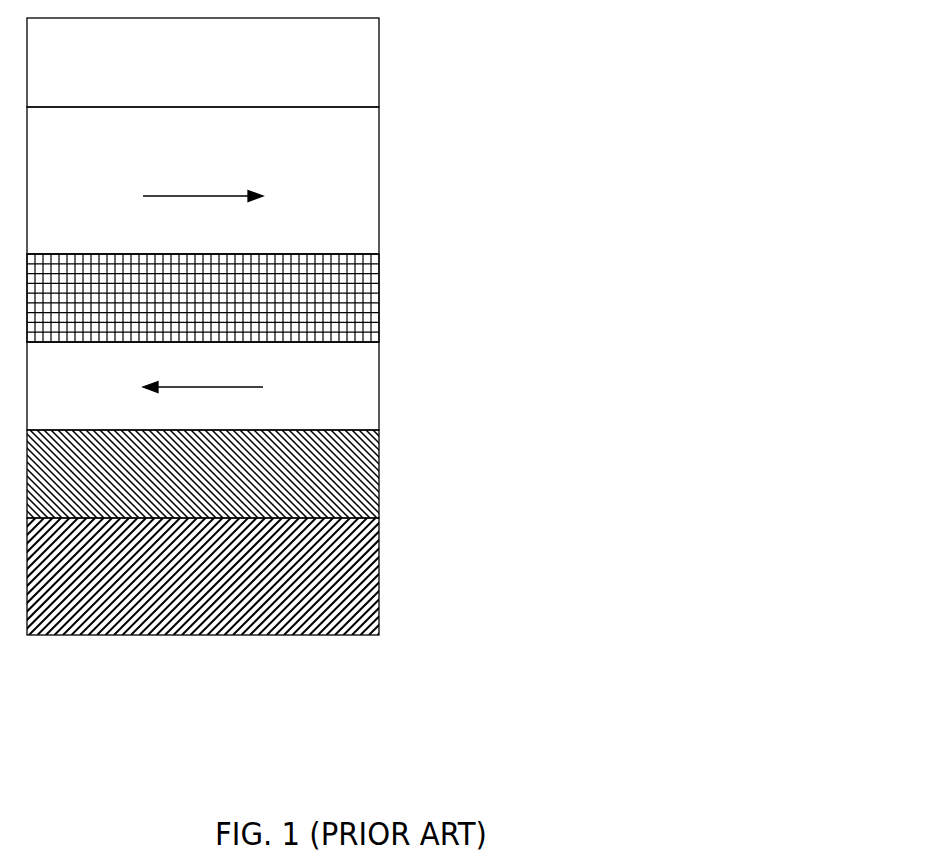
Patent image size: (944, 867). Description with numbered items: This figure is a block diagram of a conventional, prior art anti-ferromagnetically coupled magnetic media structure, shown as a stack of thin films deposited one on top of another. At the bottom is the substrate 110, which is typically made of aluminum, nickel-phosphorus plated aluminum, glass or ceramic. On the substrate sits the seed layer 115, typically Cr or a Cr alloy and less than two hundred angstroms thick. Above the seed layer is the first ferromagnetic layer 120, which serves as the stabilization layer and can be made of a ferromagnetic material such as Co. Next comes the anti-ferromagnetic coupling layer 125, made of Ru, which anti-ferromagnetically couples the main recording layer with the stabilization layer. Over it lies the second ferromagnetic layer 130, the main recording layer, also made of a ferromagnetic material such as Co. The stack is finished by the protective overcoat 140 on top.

The protective overcoat 140 is at (379, 60).
The second ferromagnetic layer 130 is at (379, 178).
The anti-ferromagnetic coupling layer 125 is at (379, 293).
The first ferromagnetic layer 120 is at (379, 383).
The seed layer 115 is at (379, 472).
The substrate 110 is at (379, 565).